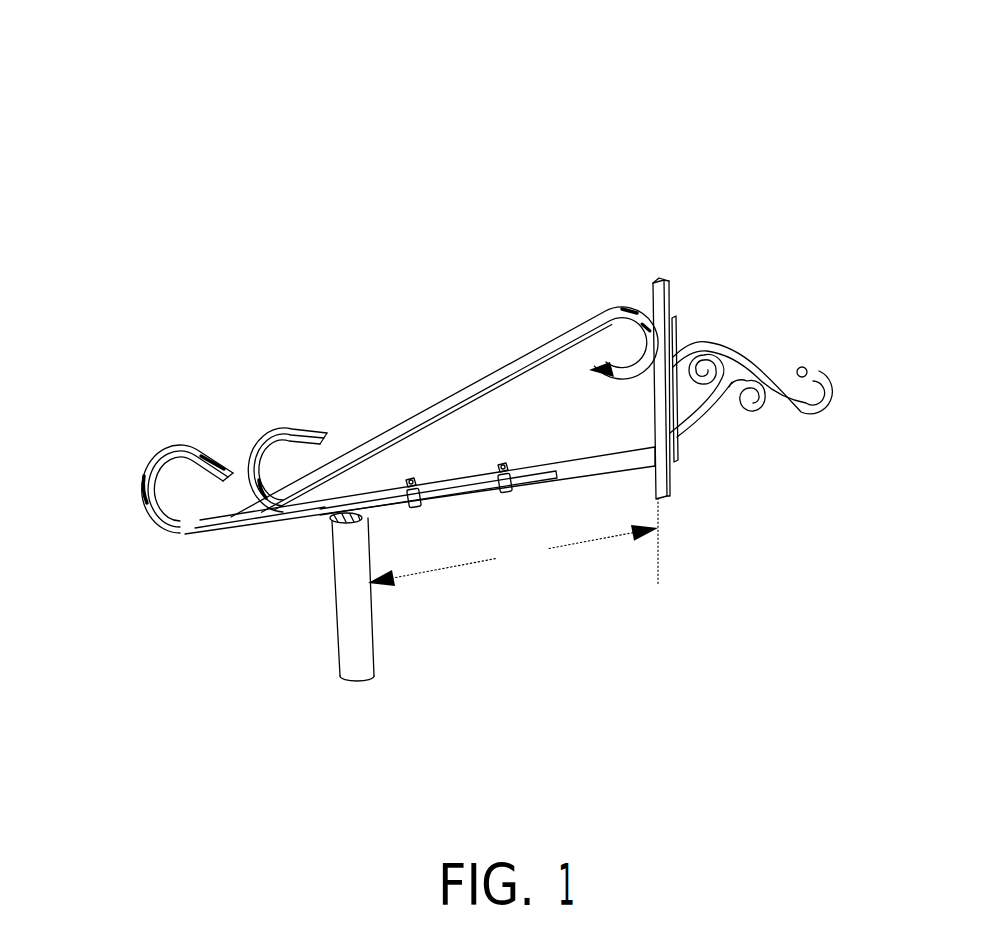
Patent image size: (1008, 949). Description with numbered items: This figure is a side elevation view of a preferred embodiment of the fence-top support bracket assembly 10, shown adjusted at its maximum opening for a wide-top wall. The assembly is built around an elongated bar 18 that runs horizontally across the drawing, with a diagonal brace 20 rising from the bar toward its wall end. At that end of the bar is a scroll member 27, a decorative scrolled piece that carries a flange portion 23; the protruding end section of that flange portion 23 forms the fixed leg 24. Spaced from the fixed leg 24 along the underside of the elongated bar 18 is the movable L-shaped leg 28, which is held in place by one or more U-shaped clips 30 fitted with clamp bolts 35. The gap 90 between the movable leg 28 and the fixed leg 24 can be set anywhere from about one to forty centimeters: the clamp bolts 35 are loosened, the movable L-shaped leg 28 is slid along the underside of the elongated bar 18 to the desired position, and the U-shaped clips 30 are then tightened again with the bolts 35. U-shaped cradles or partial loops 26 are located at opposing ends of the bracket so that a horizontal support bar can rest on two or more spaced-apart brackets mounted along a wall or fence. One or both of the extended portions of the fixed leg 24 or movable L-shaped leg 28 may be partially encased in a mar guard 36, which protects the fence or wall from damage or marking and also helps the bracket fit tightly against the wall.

The fence-top support bracket assembly 10 is at (447, 244).
The elongated bar 18 is at (637, 465).
The diagonal brace 20 is at (520, 367).
The flange portion 23 is at (669, 303).
The fixed leg 24 is at (668, 468).
The U-shaped cradles or partial loops 26 is at (143, 483).
The scroll member 27 is at (727, 401).
The movable L-shaped leg 28 is at (367, 513).
The U-shaped clips 30 is at (500, 476).
The clamp bolts 35 is at (500, 463).
The mar guard 36 is at (340, 607).
The gap 90 is at (513, 542).